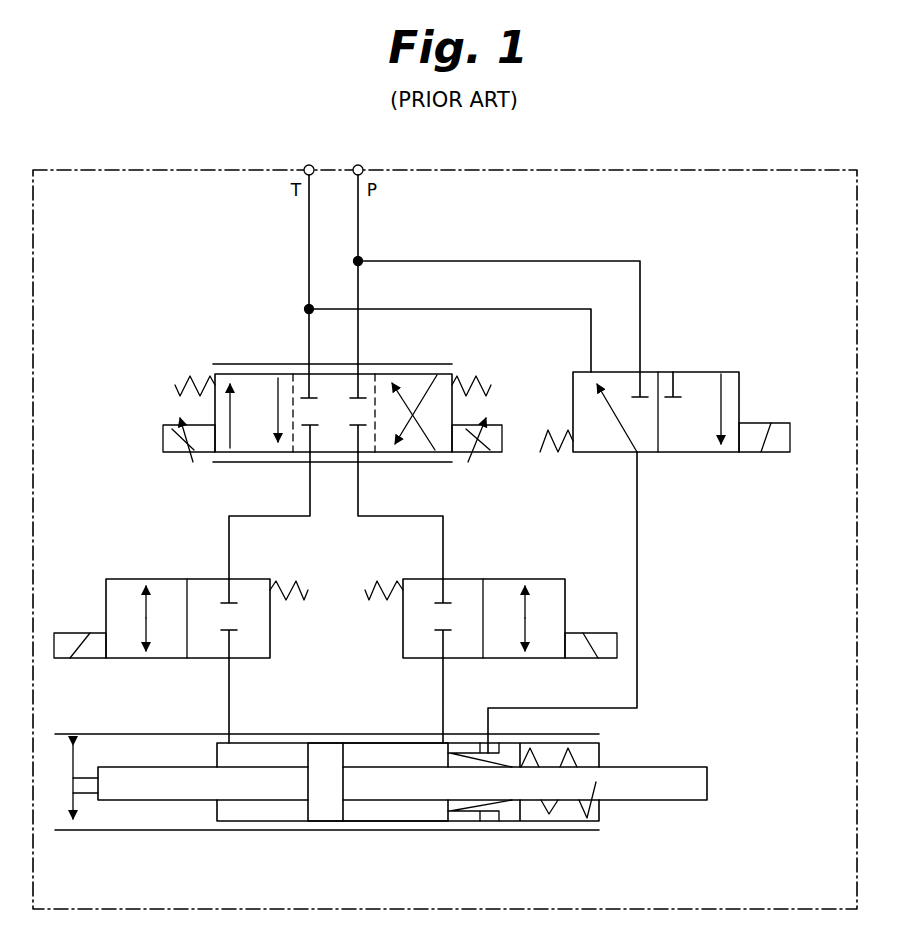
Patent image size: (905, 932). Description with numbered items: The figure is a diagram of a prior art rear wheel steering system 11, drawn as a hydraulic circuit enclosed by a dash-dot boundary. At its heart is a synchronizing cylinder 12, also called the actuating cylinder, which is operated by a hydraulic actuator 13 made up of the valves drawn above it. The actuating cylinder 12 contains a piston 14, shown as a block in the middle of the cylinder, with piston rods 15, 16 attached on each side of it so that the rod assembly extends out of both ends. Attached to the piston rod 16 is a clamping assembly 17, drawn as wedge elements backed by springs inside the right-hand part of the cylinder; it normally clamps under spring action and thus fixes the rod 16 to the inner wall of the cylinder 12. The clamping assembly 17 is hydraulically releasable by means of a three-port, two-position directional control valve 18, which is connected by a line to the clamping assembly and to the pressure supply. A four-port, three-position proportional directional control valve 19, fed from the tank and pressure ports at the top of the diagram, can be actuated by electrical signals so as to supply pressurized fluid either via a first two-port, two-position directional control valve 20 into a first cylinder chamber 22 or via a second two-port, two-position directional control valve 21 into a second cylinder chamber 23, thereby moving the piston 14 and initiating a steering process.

The rear wheel steering system 11 is at (643, 904).
The synchronizing cylinder 12 is at (381, 817).
The hydraulic actuator 13 is at (518, 529).
The piston 14 is at (325, 812).
The piston rod 15 is at (118, 793).
The piston rod 16 is at (690, 785).
The clamping assembly 17 is at (500, 822).
The 3/2 directional control valve 18 is at (735, 372).
The 4/3 proportional directional control valve 19 is at (455, 372).
The first 2/2 directional control valve 20 is at (243, 660).
The second 2/2 directional control valve 21 is at (425, 660).
The first cylinder chamber 22 is at (228, 815).
The second cylinder chamber 23 is at (371, 812).